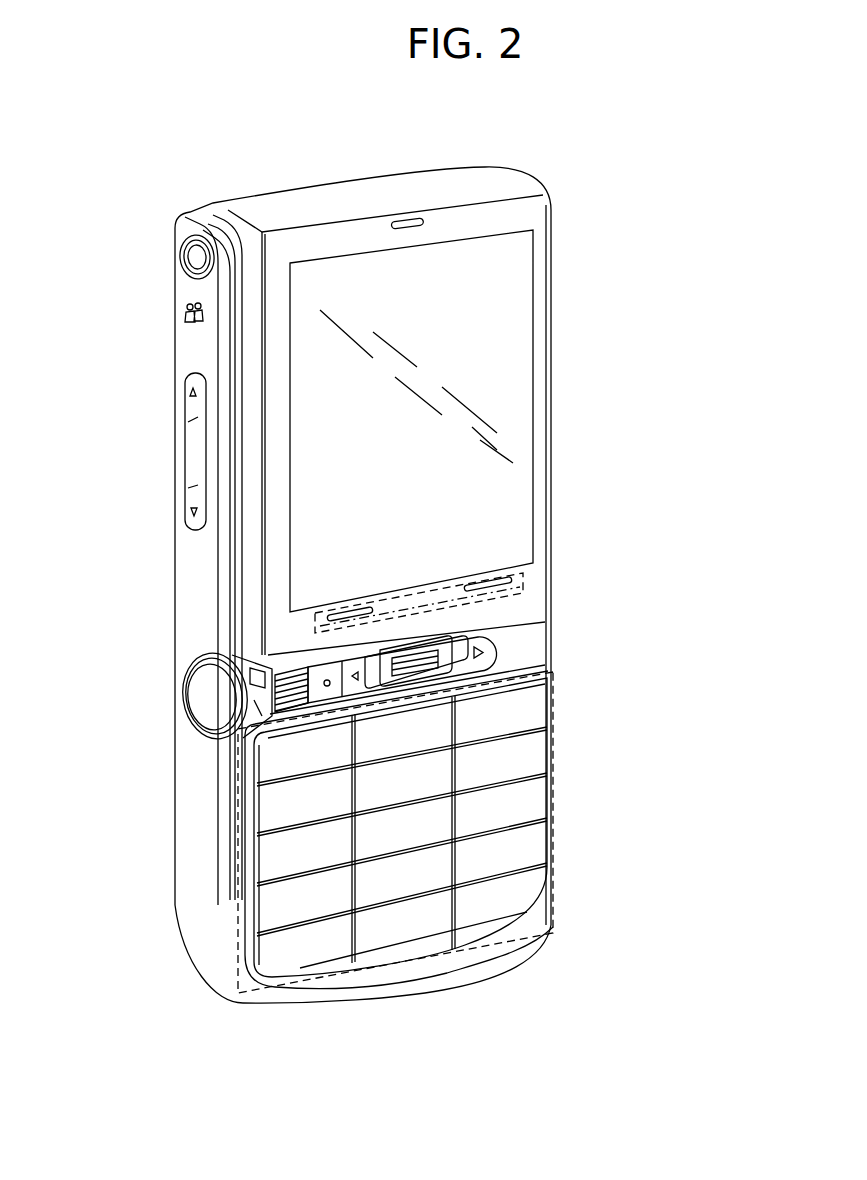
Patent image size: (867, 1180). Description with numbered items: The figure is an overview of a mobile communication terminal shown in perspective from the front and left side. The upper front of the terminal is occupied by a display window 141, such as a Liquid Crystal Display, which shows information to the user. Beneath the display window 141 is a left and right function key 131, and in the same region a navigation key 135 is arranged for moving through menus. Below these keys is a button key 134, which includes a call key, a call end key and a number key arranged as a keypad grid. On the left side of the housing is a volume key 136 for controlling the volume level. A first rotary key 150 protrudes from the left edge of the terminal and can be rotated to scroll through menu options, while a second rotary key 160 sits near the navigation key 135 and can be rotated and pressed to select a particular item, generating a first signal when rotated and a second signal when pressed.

The display window 141 is at (512, 398).
The left and right function key 131 is at (527, 572).
The navigation key 135 is at (477, 645).
The second rotary key 160 is at (433, 668).
The first rotary key 150 is at (212, 697).
The volume key 136 is at (197, 450).
The button key 134 is at (553, 780).